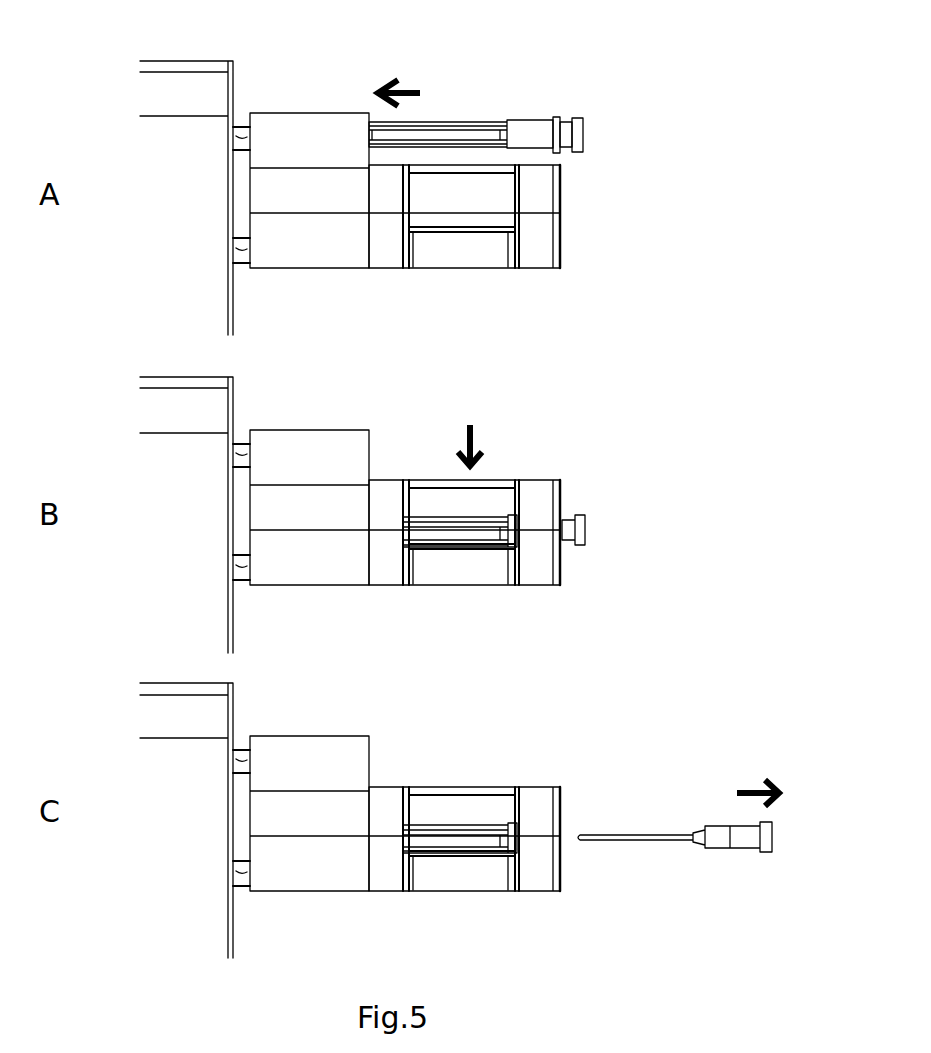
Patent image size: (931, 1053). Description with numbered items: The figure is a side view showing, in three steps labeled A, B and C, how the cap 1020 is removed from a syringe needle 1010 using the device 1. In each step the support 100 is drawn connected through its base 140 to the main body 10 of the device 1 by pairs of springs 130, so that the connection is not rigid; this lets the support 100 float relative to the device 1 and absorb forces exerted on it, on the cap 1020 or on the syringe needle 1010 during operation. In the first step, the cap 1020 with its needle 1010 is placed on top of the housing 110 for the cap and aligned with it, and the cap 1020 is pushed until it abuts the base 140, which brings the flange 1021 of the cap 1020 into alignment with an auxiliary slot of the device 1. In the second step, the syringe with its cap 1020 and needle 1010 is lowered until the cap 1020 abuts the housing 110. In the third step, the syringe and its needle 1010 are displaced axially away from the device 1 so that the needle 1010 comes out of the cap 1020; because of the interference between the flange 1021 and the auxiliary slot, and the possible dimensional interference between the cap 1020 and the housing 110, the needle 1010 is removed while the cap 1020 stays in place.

The device 1 is at (145, 715).
The main body 10 is at (183, 868).
The support 100 is at (583, 870).
The housing for the cap 110 is at (495, 812).
The springs 130 is at (230, 873).
The base 140 is at (312, 740).
The syringe needle 1010 is at (713, 830).
The cap 1020 is at (438, 840).
The flange 1021 is at (560, 118).